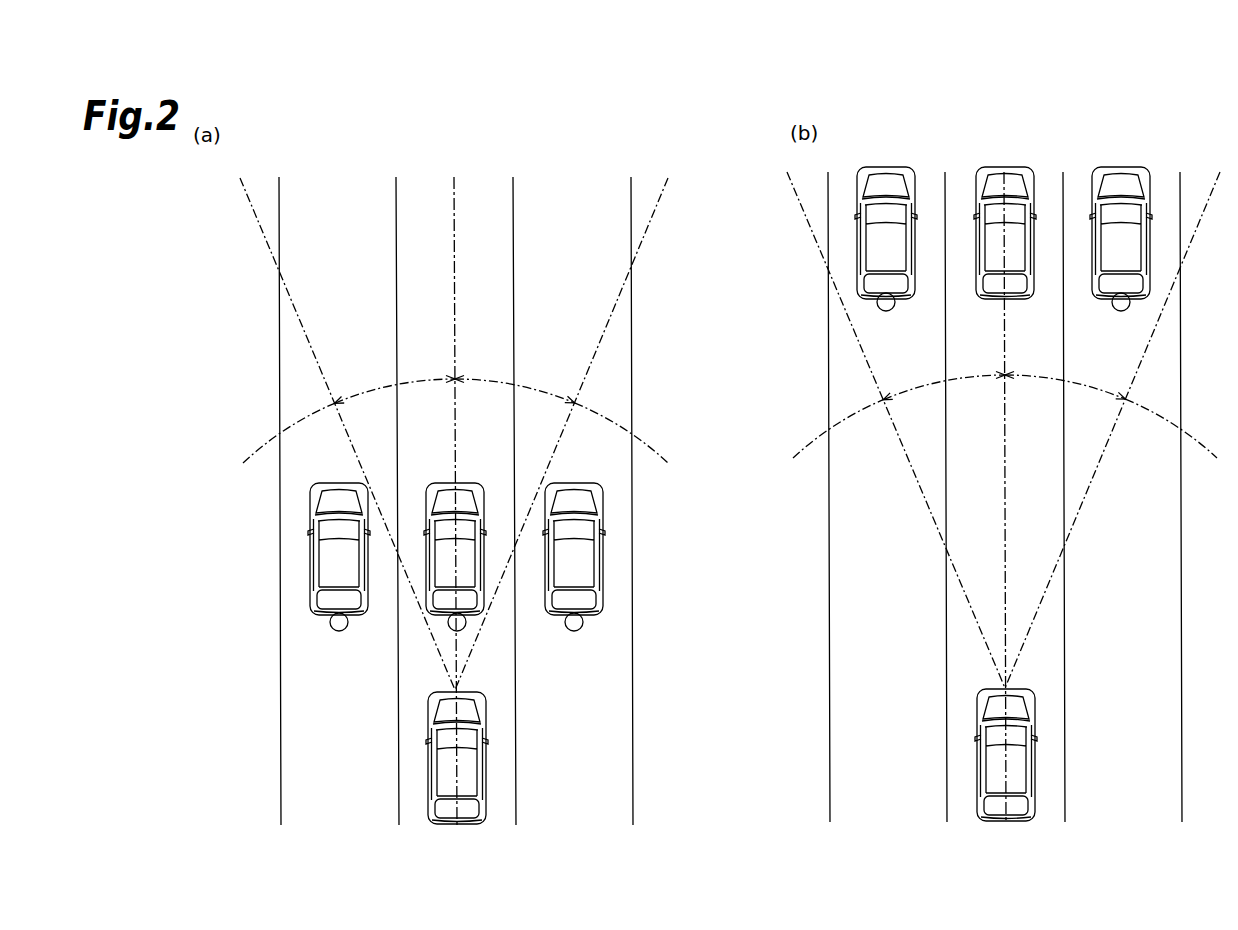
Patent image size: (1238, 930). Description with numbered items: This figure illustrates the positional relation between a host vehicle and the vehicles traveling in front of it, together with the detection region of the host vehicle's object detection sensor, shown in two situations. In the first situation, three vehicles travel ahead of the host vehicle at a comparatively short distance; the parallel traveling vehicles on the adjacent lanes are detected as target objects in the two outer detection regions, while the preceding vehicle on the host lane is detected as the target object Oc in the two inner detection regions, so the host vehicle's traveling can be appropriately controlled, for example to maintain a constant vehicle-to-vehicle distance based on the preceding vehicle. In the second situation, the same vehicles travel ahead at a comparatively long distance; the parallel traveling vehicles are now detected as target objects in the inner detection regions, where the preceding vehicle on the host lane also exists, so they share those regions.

The target object Oc is at (464, 630).